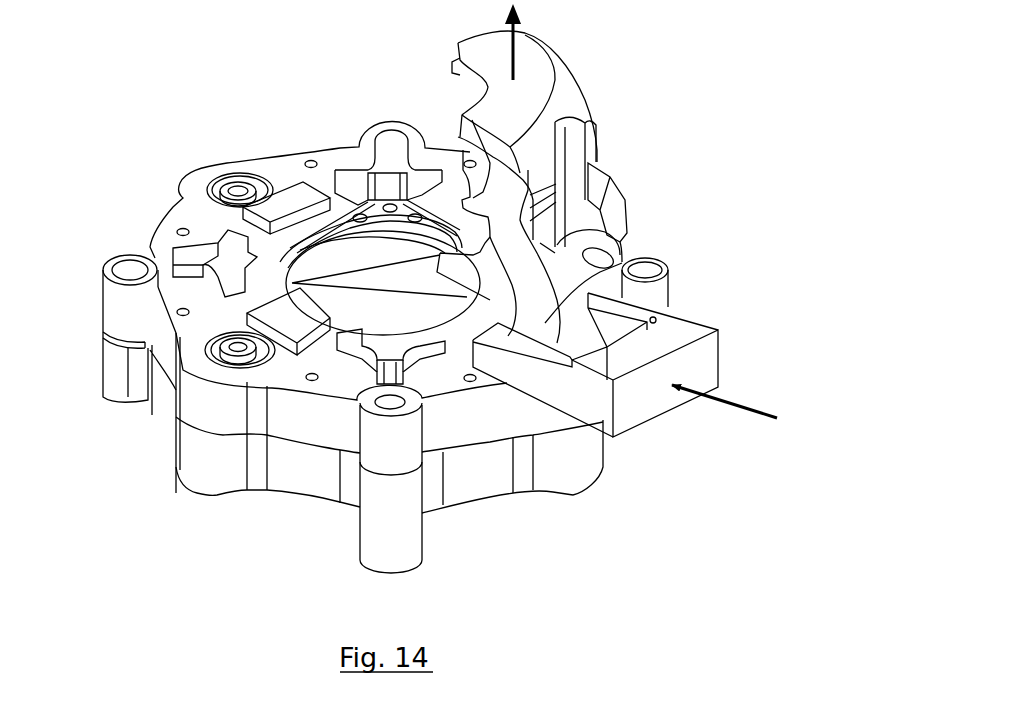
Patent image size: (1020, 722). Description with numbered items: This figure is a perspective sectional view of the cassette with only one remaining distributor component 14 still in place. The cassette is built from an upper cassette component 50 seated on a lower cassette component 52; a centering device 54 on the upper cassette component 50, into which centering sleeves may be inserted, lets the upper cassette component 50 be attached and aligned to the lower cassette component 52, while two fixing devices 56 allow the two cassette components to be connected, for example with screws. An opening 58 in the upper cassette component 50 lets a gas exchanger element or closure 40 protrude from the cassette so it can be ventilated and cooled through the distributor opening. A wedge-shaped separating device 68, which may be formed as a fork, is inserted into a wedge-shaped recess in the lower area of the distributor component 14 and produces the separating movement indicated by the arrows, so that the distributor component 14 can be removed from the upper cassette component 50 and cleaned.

The distributor component 14 is at (589, 96).
The closure 40 is at (306, 249).
The upper cassette component 50 is at (493, 422).
The lower cassette component 52 is at (453, 487).
The centering device 54 is at (367, 412).
The fixing device 56 is at (675, 270).
The opening 58 is at (247, 297).
The separating device 68 is at (638, 405).